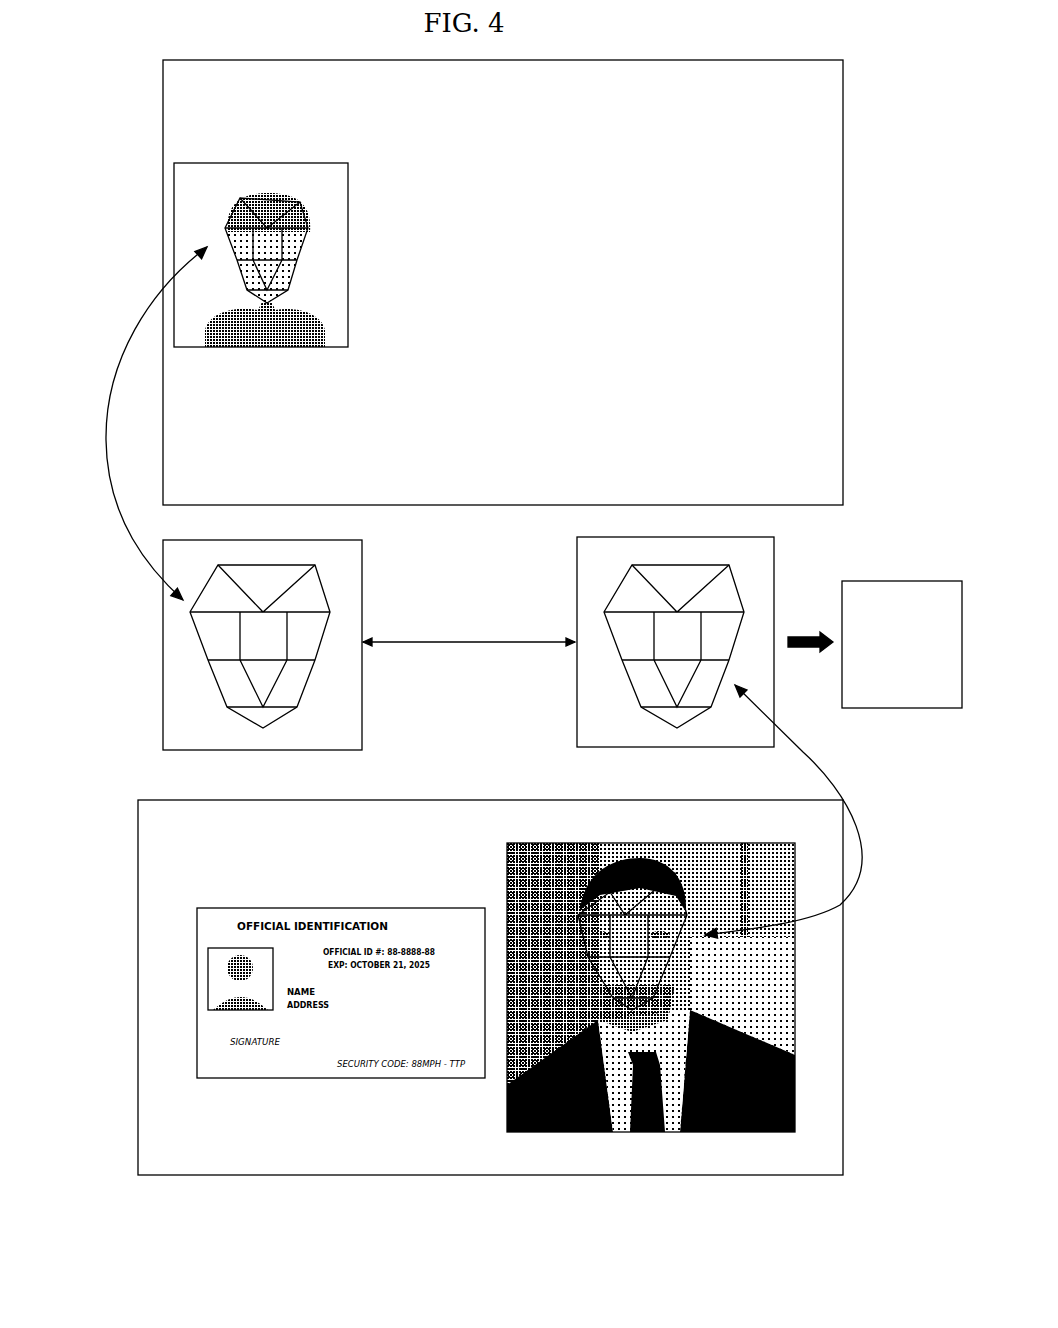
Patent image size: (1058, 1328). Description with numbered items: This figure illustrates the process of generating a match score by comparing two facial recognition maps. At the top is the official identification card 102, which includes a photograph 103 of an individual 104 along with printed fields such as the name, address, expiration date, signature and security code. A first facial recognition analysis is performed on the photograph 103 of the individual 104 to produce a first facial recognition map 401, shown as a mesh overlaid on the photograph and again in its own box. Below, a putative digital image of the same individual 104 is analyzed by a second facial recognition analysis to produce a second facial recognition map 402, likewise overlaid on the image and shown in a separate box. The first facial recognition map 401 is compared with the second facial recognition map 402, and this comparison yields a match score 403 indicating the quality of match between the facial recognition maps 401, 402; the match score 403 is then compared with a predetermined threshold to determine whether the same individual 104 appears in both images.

The official identification card 102 is at (843, 252).
The photograph 103 is at (175, 225).
The individual 104 is at (227, 315).
The first facial recognition map 401 is at (233, 212).
The second facial recognition map 402 is at (577, 700).
The match score 403 is at (940, 710).